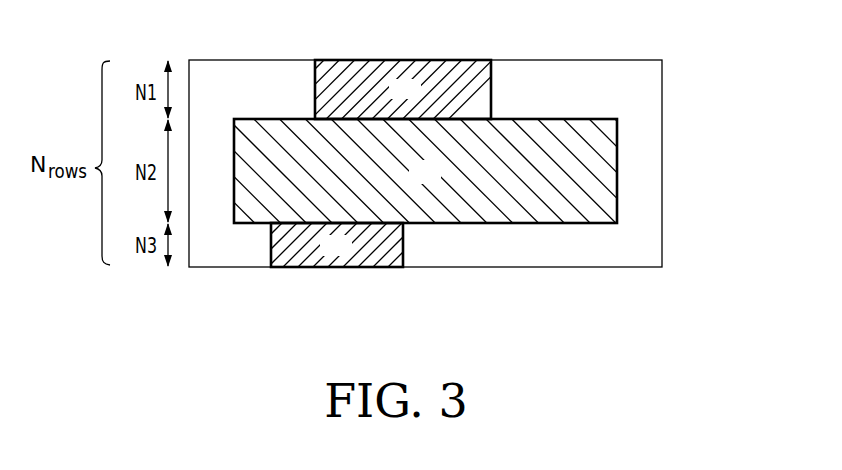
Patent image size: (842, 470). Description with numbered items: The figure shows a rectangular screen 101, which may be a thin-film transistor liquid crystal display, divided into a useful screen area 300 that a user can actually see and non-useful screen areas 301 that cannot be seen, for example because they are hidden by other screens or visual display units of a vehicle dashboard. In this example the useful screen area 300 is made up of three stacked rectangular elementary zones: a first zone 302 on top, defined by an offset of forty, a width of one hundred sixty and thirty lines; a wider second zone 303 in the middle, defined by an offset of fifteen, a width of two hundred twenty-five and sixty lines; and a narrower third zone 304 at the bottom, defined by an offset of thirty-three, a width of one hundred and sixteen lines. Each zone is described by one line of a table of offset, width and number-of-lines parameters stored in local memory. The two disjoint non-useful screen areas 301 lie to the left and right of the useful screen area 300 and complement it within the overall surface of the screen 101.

The screen 101 is at (662, 128).
The useful screen area 300 is at (530, 223).
The non-useful screen area 301 is at (238, 78).
The first zone 302 is at (459, 78).
The second zone 303 is at (607, 178).
The third zone 304 is at (395, 240).